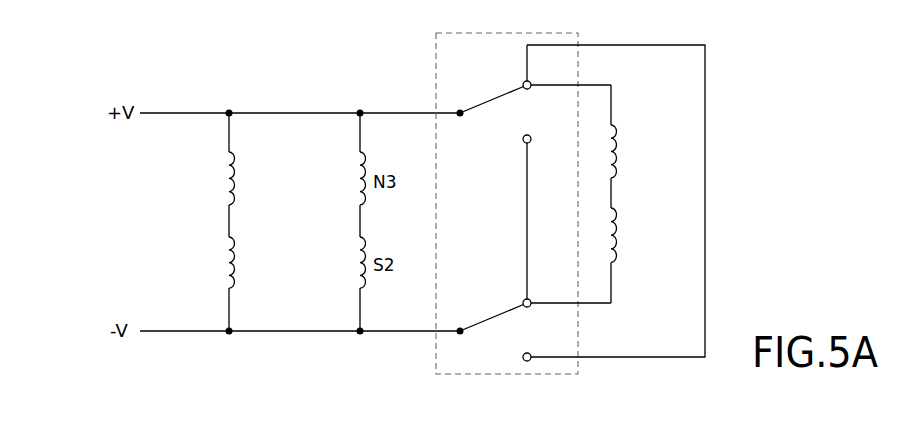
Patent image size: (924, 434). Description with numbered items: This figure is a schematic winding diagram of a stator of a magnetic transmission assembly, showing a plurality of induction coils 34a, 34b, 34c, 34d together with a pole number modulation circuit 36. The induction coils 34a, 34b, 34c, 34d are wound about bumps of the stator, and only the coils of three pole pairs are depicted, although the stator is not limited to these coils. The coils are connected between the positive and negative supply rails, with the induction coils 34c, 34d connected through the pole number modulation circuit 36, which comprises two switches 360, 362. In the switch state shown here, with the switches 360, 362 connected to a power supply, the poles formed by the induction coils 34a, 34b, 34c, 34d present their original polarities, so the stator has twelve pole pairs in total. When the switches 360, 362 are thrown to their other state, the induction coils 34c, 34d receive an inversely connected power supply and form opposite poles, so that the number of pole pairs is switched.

The induction coil 34a is at (226, 178).
The induction coil 34b is at (226, 262).
The induction coil 34c is at (622, 138).
The induction coil 34d is at (622, 220).
The pole number modulation circuit 36 is at (494, 203).
The switch 360 is at (494, 100).
The switch 362 is at (494, 318).